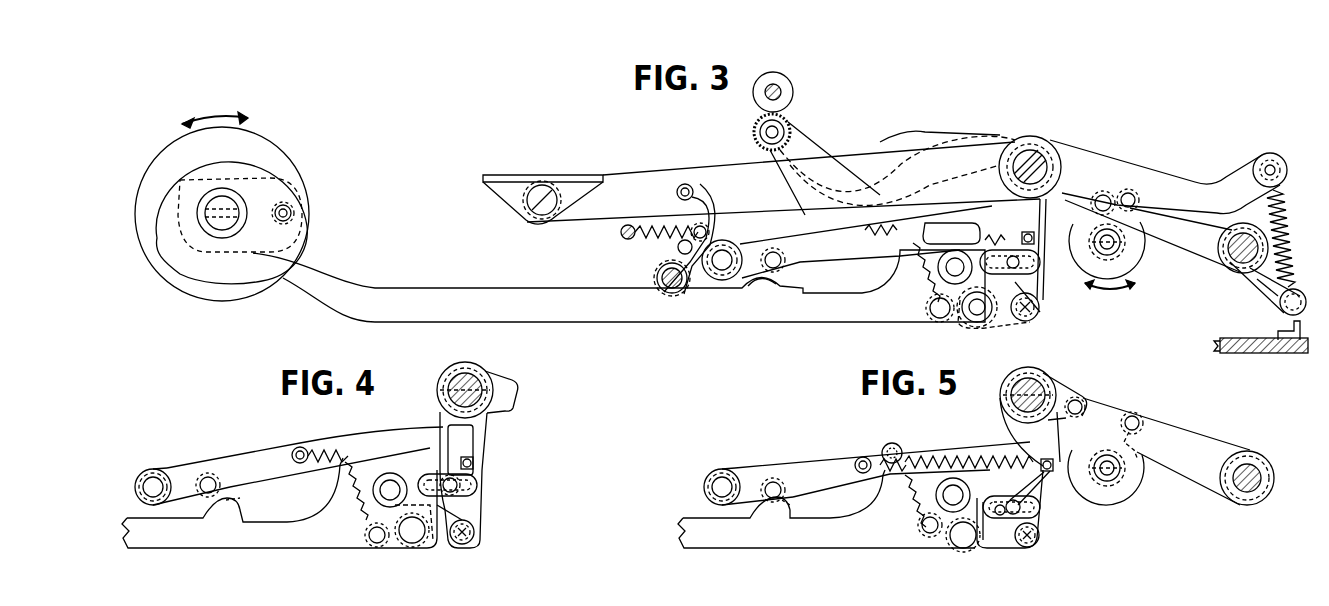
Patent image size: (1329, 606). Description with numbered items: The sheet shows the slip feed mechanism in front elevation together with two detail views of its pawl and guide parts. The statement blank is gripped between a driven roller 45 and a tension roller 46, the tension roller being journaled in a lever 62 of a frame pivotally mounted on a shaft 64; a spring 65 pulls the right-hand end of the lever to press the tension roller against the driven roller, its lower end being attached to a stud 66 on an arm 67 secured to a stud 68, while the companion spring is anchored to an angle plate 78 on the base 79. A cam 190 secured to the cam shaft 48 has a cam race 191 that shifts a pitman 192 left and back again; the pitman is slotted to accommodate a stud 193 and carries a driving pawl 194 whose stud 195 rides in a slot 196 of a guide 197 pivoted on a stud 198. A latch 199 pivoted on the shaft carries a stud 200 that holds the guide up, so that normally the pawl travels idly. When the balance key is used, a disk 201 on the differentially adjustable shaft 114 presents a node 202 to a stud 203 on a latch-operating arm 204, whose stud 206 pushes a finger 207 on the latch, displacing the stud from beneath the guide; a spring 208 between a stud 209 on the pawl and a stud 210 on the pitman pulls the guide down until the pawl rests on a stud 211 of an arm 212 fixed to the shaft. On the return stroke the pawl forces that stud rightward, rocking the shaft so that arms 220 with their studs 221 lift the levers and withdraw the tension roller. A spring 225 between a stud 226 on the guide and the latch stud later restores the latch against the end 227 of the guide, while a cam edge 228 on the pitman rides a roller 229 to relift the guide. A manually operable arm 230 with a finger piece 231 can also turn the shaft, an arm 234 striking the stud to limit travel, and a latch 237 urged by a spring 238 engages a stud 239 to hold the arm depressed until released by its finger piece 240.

In FIG. 3, the driven roller 45 is at (786, 96).
In FIG. 3, the tension roller 46 is at (785, 126).
In FIG. 3, the cam shaft 48 is at (221, 226).
In FIG. 3, the lever 62 is at (1246, 170).
In FIG. 3, the shaft 64 is at (1030, 151).
In FIG. 4, the shaft 64 is at (480, 385).
In FIG. 5, the shaft 64 is at (1045, 385).
In FIG. 3, the spring 65 is at (1271, 208).
In FIG. 3, the stud 66 is at (1280, 303).
In FIG. 3, the arm 67 is at (1265, 284).
In FIG. 3, the stud 68 is at (1228, 248).
In FIG. 5, the stud 68 is at (1232, 473).
In FIG. 3, the angle plate 78 is at (1280, 338).
In FIG. 3, the base 79 is at (1225, 343).
In FIG. 3, the differentially adjustable shaft 114 is at (1107, 251).
In FIG. 5, the differentially adjustable shaft 114 is at (1108, 461).
In FIG. 3, the cam 190 is at (270, 162).
In FIG. 3, the cam race 191 is at (232, 164).
In FIG. 3, the pitman 192 is at (526, 294).
In FIG. 4, the pitman 192 is at (297, 524).
In FIG. 5, the pitman 192 is at (841, 529).
In FIG. 3, the stud 193 is at (948, 271).
In FIG. 4, the stud 193 is at (395, 481).
In FIG. 5, the stud 193 is at (950, 490).
In FIG. 3, the driving pawl 194 is at (1003, 312).
In FIG. 4, the driving pawl 194 is at (443, 543).
In FIG. 5, the driving pawl 194 is at (988, 546).
In FIG. 3, the stud 195 is at (1033, 275).
In FIG. 4, the stud 195 is at (475, 495).
In FIG. 5, the stud 195 is at (1038, 510).
In FIG. 3, the slot 196 is at (1020, 253).
In FIG. 4, the slot 196 is at (457, 482).
In FIG. 5, the slot 196 is at (1000, 510).
In FIG. 3, the guide 197 is at (790, 236).
In FIG. 4, the guide 197 is at (412, 432).
In FIG. 5, the guide 197 is at (913, 446).
In FIG. 3, the stud 198 is at (718, 250).
In FIG. 4, the stud 198 is at (168, 458).
In FIG. 5, the stud 198 is at (738, 458).
In FIG. 4, the latch 199 is at (485, 427).
In FIG. 5, the latch 199 is at (1023, 424).
In FIG. 3, the stud 200 is at (1035, 237).
In FIG. 4, the stud 200 is at (478, 462).
In FIG. 5, the stud 200 is at (1032, 503).
In FIG. 3, the disk 201 is at (1138, 257).
In FIG. 5, the disk 201 is at (1140, 481).
In FIG. 3, the node 202 is at (1082, 266).
In FIG. 5, the node 202 is at (1136, 438).
In FIG. 3, the stud 203 is at (1133, 208).
In FIG. 5, the stud 203 is at (1134, 416).
In FIG. 3, the latch-operating arm 204 is at (1220, 263).
In FIG. 5, the latch-operating arm 204 is at (1216, 440).
In FIG. 5, the stud 206 is at (1083, 410).
In FIG. 4, the finger 207 is at (516, 388).
In FIG. 5, the finger 207 is at (1075, 392).
In FIG. 4, the spring 208 is at (364, 506).
In FIG. 5, the spring 208 is at (918, 510).
In FIG. 4, the stud 209 is at (368, 535).
In FIG. 5, the stud 209 is at (920, 528).
In FIG. 5, the stud 210 is at (898, 443).
In FIG. 3, the stud 211 is at (1031, 316).
In FIG. 4, the stud 211 is at (475, 538).
In FIG. 5, the stud 211 is at (1037, 545).
In FIG. 3, the arm 212 is at (1035, 302).
In FIG. 4, the arm 212 is at (472, 518).
In FIG. 5, the arm 212 is at (1035, 525).
In FIG. 3, the arm 220 is at (1122, 147).
In FIG. 3, the stud 221 is at (1104, 195).
In FIG. 4, the spring 225 is at (316, 452).
In FIG. 5, the spring 225 is at (928, 460).
In FIG. 4, the stud 226 is at (302, 447).
In FIG. 5, the stud 226 is at (864, 457).
In FIG. 4, the end 227 is at (475, 443).
In FIG. 5, the end 227 is at (1050, 458).
In FIG. 3, the cam edge 228 is at (770, 276).
In FIG. 4, the cam edge 228 is at (238, 514).
In FIG. 5, the cam edge 228 is at (792, 505).
In FIG. 3, the roller 229 is at (770, 270).
In FIG. 4, the roller 229 is at (208, 478).
In FIG. 5, the roller 229 is at (774, 482).
In FIG. 3, the manually operable arm 230 is at (721, 166).
In FIG. 3, the finger piece 231 is at (497, 178).
In FIG. 3, the arm 234 is at (965, 186).
In FIG. 3, the latch 237 is at (658, 281).
In FIG. 3, the spring 238 is at (648, 239).
In FIG. 3, the stud 239 is at (676, 190).
In FIG. 3, the finger piece 240 is at (678, 252).